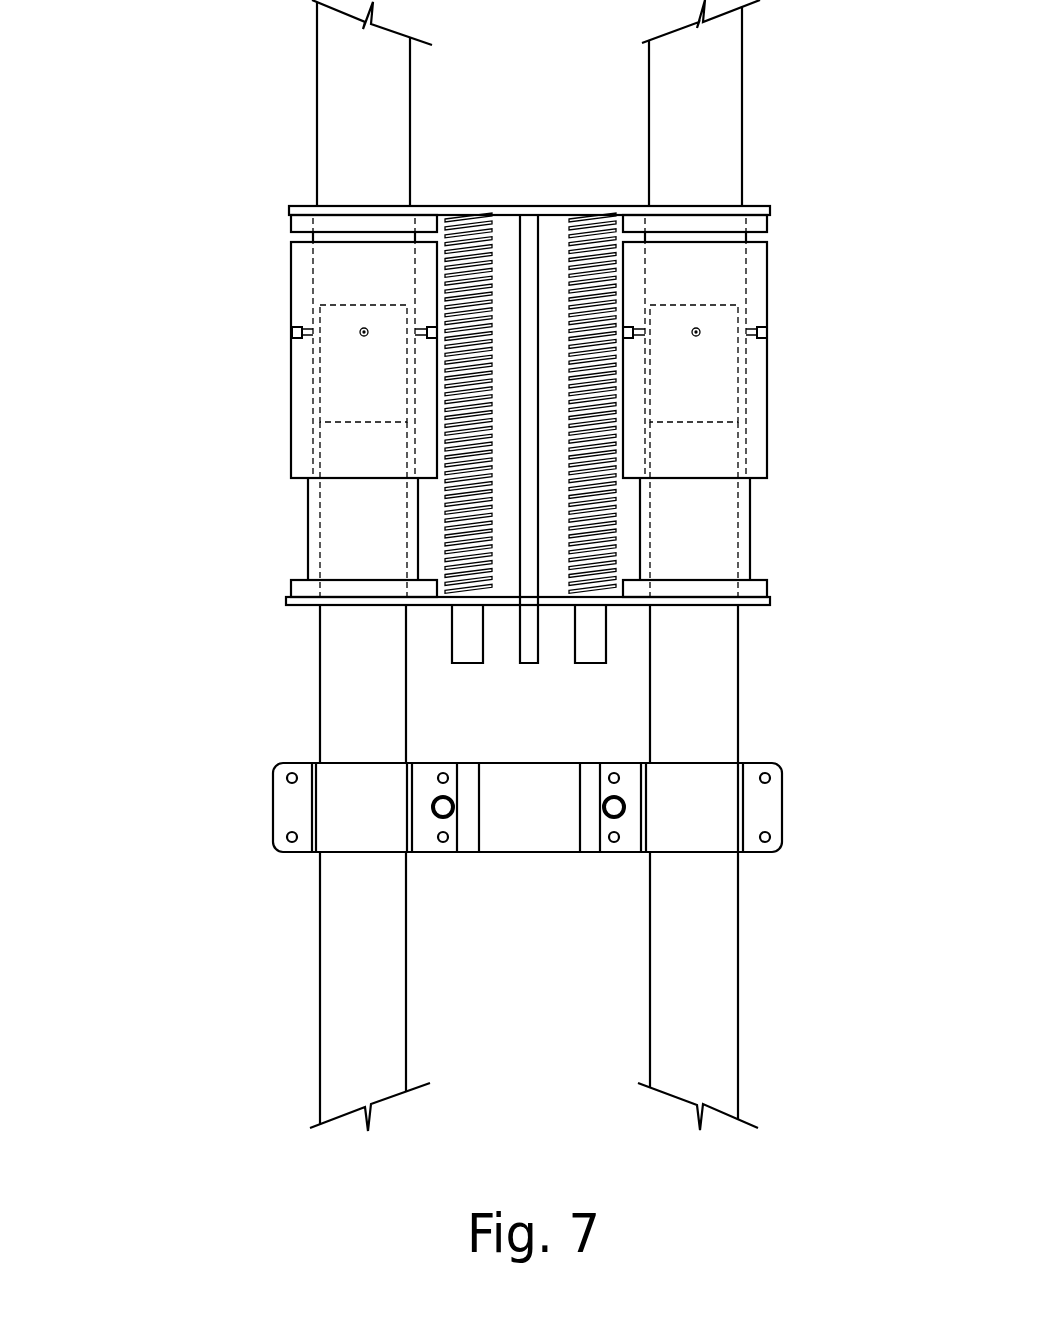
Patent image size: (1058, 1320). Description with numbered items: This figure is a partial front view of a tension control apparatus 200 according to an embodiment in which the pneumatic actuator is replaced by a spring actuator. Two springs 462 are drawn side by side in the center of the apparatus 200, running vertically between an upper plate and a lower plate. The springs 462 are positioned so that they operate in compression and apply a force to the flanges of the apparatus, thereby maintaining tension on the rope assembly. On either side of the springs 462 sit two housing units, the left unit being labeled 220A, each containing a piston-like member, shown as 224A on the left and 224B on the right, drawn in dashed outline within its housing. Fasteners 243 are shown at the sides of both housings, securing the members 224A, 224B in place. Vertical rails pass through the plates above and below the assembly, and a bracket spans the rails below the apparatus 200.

The positioning assembly 200 is at (817, 268).
The springs 462 is at (493, 245).
The actuator unit 220A is at (238, 407).
The piston plate 224A is at (365, 303).
The piston plate 224B is at (718, 313).
The fastener 243 is at (430, 338).